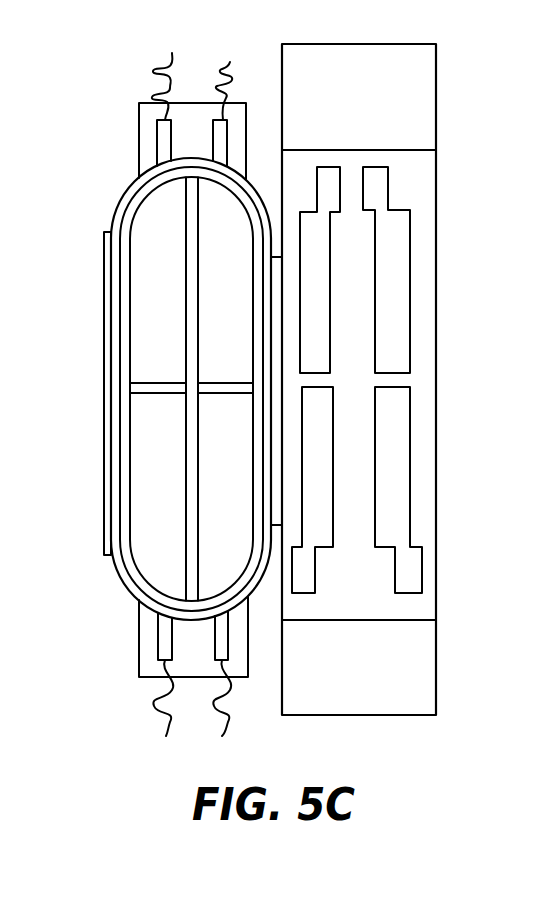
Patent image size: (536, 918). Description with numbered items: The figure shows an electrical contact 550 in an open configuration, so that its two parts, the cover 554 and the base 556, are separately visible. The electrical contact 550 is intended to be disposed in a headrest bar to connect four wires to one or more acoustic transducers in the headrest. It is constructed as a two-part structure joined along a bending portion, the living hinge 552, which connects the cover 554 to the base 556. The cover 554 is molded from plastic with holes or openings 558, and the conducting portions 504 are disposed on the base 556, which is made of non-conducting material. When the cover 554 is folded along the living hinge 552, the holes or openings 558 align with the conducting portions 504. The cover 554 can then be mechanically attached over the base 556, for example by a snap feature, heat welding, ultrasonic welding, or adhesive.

The electrical contact 550 is at (468, 142).
The conducting portions 504 is at (410, 322).
The base 556 is at (423, 418).
The holes or openings 558 is at (150, 262).
The cover 554 is at (130, 390).
The living hinge 552 is at (275, 518).